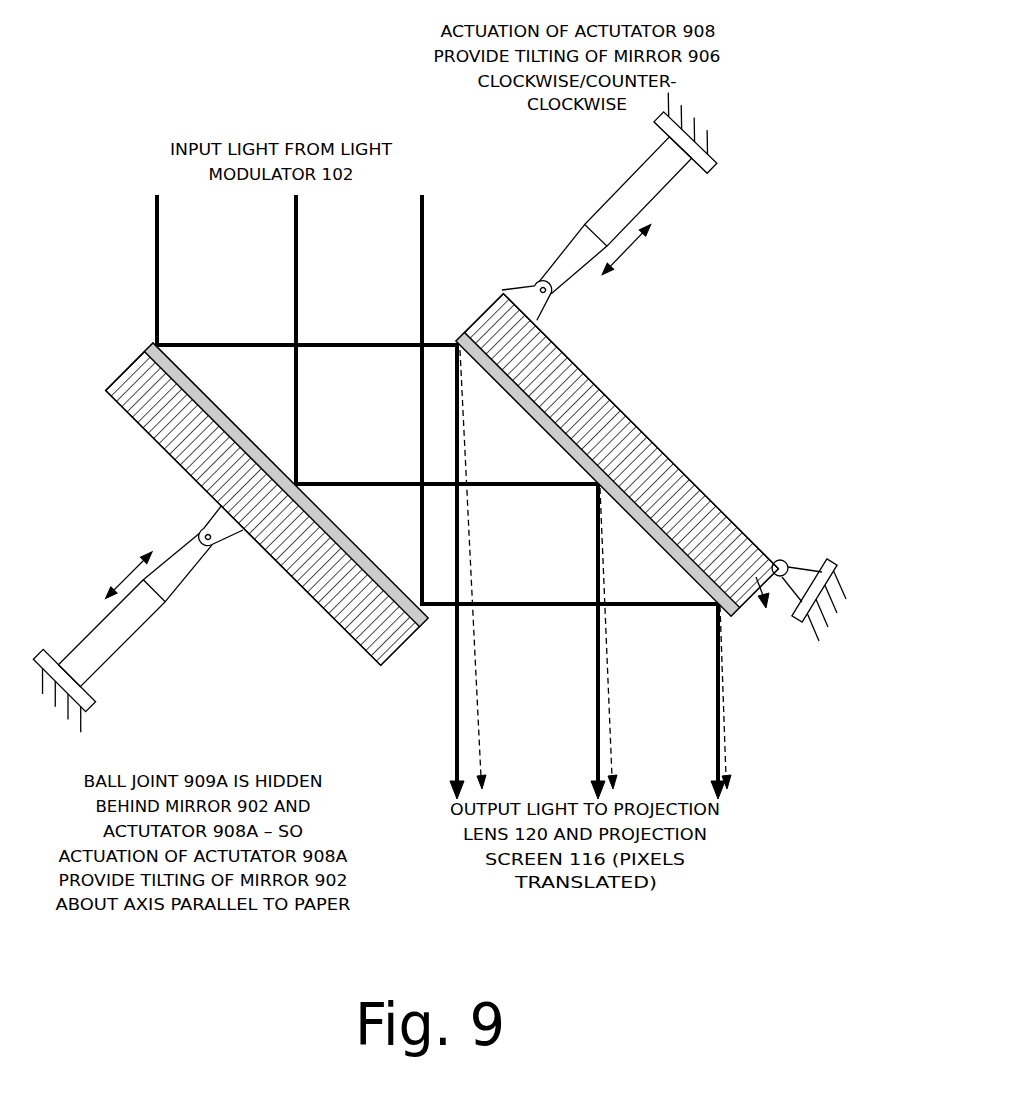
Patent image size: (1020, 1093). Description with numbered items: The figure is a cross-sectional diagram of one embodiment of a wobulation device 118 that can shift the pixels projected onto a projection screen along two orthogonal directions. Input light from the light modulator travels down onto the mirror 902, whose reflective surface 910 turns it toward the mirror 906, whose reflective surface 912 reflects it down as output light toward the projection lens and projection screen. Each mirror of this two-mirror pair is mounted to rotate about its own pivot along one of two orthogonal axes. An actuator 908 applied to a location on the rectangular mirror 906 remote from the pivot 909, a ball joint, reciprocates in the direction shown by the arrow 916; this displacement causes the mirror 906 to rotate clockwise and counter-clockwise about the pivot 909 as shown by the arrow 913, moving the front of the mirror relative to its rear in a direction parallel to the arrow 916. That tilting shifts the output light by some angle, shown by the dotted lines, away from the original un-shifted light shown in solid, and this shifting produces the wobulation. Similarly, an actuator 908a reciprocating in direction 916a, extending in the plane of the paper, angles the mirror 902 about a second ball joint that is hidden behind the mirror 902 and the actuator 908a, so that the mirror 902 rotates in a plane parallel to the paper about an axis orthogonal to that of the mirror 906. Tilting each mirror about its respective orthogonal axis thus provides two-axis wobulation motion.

The wobulation device 118 is at (142, 138).
The mirror 902 is at (281, 481).
The mirror 906 is at (593, 472).
The actuator 908 is at (632, 237).
The actuator 908a is at (132, 586).
The pivot 909 is at (835, 588).
The reflective surface 910 is at (203, 392).
The reflective surface 912 is at (542, 433).
The arrow 913 is at (765, 558).
The arrow 916 is at (632, 252).
The direction 916a is at (127, 572).